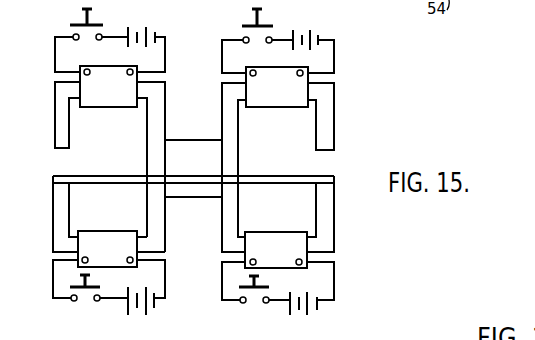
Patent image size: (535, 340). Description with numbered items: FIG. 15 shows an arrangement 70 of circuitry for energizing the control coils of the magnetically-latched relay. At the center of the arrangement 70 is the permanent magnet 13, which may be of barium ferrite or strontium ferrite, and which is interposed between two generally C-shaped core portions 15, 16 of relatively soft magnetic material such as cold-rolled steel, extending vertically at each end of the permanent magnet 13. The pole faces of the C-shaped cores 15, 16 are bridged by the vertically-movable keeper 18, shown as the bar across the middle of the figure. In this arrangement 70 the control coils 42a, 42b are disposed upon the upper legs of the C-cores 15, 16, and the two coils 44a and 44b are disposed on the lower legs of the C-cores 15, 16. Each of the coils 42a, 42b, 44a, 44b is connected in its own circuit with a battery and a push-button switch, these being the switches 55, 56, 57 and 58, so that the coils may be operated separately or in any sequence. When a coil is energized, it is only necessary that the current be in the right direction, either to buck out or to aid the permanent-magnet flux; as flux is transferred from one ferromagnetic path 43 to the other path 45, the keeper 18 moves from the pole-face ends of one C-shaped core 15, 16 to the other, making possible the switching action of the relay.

The permanent magnet 13 is at (198, 139).
The C-shaped core portion 15 is at (55, 133).
The C-shaped core portion 16 is at (370, 137).
The keeper 18 is at (132, 164).
The control coil 42a is at (111, 93).
The control coil 42b is at (291, 97).
The ferromagnetic path 43 is at (336, 100).
The coil 44a is at (98, 240).
The coil 44b is at (267, 242).
The ferromagnetic path 45 is at (60, 103).
The push button switch 55 is at (99, 23).
The push button switch 56 is at (265, 24).
The push button switch 57 is at (86, 292).
The push button switch 58 is at (255, 292).
The arrangement 70 is at (202, 32).